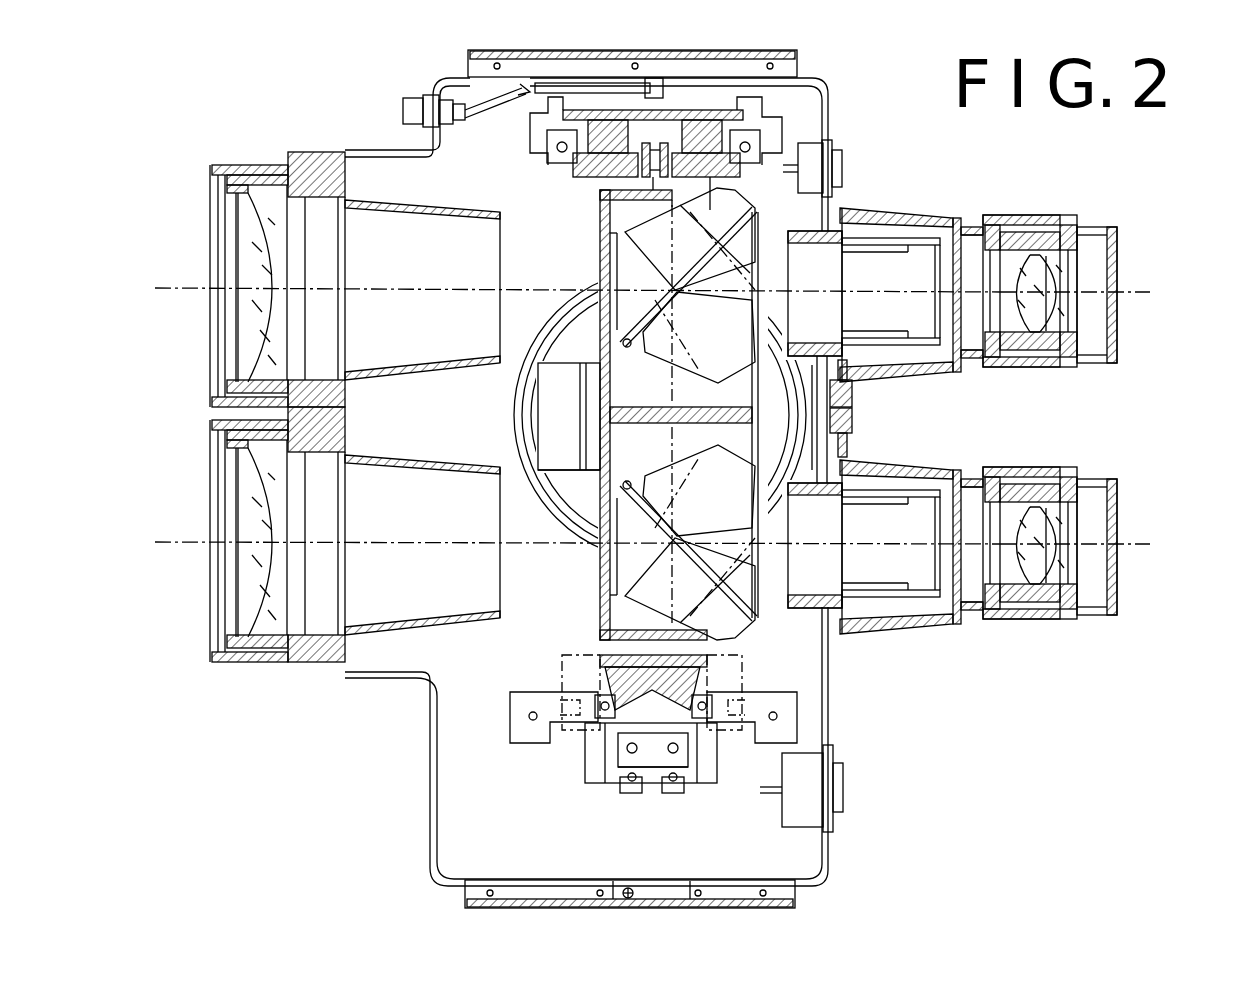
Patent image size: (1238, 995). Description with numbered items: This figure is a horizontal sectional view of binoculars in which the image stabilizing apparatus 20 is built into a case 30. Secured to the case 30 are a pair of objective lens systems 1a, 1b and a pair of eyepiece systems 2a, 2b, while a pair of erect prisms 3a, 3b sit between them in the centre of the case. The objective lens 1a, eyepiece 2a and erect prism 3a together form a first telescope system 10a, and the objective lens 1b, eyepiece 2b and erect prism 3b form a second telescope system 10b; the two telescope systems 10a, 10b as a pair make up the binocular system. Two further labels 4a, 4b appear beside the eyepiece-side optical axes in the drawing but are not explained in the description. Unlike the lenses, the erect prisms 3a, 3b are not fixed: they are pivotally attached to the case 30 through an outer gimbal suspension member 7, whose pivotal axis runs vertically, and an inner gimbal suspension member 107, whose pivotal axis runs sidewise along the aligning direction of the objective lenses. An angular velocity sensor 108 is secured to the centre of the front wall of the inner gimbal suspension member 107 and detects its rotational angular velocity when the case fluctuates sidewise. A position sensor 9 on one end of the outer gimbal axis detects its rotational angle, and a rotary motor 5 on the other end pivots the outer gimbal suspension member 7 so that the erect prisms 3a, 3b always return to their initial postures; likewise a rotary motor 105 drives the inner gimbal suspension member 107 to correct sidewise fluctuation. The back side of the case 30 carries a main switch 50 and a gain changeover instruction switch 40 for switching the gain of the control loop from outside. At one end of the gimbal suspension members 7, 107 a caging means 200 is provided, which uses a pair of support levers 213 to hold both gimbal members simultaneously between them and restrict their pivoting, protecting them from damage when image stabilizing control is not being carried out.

The objective lens system 1a is at (242, 158).
The objective lens system 1b is at (243, 678).
The eyepiece system 2a is at (1043, 210).
The eyepiece system 2b is at (1040, 626).
The erect prism 3a is at (614, 252).
The erect prism 3b is at (614, 558).
The eyepiece optical axis (upper) 4a is at (184, 284).
The eyepiece optical axis (lower) 4b is at (186, 547).
The rotary motor 5 is at (663, 110).
The outer gimbal suspension member 7 is at (718, 688).
The position sensor 9 is at (598, 735).
The first telescope system 10a is at (1152, 268).
The second telescope system 10b is at (1138, 574).
The image stabilizing apparatus 20 is at (797, 112).
The case 30 is at (823, 866).
The gain changeover instruction switch 40 is at (842, 160).
The main switch 50 is at (846, 792).
The rotary motor 105 is at (572, 487).
The inner gimbal suspension member 107 is at (598, 627).
The angular velocity sensor 108 is at (553, 403).
The caging means 200 is at (803, 716).
The support levers 213 is at (562, 658).